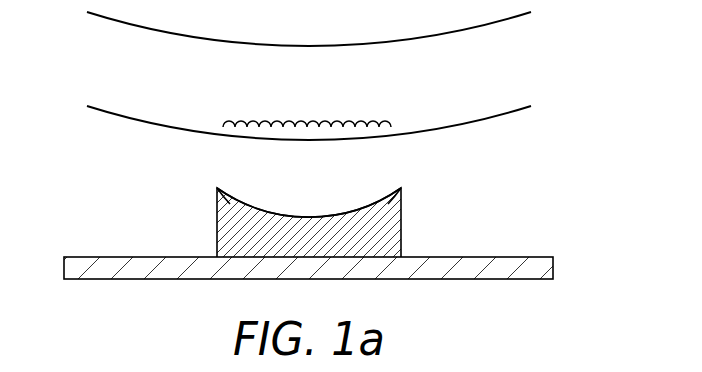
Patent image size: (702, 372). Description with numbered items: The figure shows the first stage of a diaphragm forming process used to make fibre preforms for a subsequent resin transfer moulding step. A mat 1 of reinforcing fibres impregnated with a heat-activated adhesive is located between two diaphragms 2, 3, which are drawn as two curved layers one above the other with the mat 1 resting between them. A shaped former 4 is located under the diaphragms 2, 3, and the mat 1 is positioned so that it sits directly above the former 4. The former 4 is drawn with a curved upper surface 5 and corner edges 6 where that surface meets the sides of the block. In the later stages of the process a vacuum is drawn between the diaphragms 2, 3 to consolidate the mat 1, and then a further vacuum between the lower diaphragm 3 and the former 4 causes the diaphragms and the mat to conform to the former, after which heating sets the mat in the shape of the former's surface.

The mat 1 is at (363, 124).
The diaphragm 2 is at (495, 117).
The diaphragm 3 is at (497, 22).
The shaped former 4 is at (401, 221).
The concave surface 5 is at (306, 207).
The edge of support block 6 is at (217, 189).